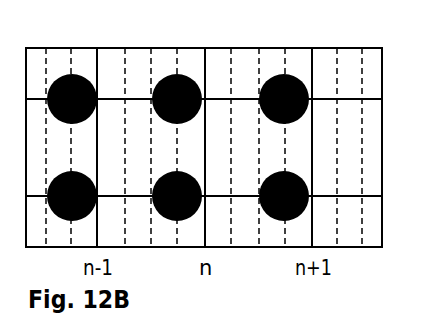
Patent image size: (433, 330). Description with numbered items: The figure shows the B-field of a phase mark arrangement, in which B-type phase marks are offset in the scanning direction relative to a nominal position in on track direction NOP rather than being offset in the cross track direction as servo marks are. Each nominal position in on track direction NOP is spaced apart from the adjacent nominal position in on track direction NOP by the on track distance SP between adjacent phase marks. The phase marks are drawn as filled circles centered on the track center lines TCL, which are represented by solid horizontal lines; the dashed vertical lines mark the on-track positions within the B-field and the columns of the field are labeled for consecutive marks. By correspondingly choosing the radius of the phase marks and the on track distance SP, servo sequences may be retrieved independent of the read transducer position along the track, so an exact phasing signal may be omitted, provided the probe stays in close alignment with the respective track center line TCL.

The element B-field is at (204, 131).
The on track distance between adjacent marks SP is at (156, 123).
The nominal position in on track direction NOP is at (313, 49).
The track center line TCL is at (224, 148).